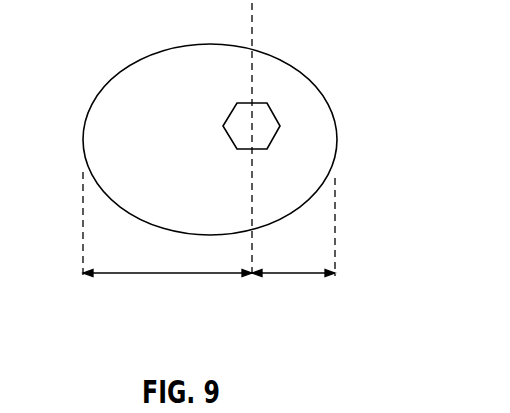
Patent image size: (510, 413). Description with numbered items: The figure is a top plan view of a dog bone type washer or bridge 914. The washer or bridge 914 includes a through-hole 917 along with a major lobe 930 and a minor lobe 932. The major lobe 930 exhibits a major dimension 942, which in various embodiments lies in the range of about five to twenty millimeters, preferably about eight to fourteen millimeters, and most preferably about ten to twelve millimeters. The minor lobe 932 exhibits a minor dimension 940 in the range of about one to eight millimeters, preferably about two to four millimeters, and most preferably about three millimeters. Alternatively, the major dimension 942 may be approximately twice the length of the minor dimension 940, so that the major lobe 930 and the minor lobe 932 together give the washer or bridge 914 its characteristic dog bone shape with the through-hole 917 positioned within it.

The washer or bridge 914 is at (107, 85).
The through-hole 917 is at (271, 108).
The major lobe 930 is at (184, 154).
The minor lobe 932 is at (324, 168).
The minor dimension 940 is at (290, 273).
The major dimension 942 is at (167, 273).